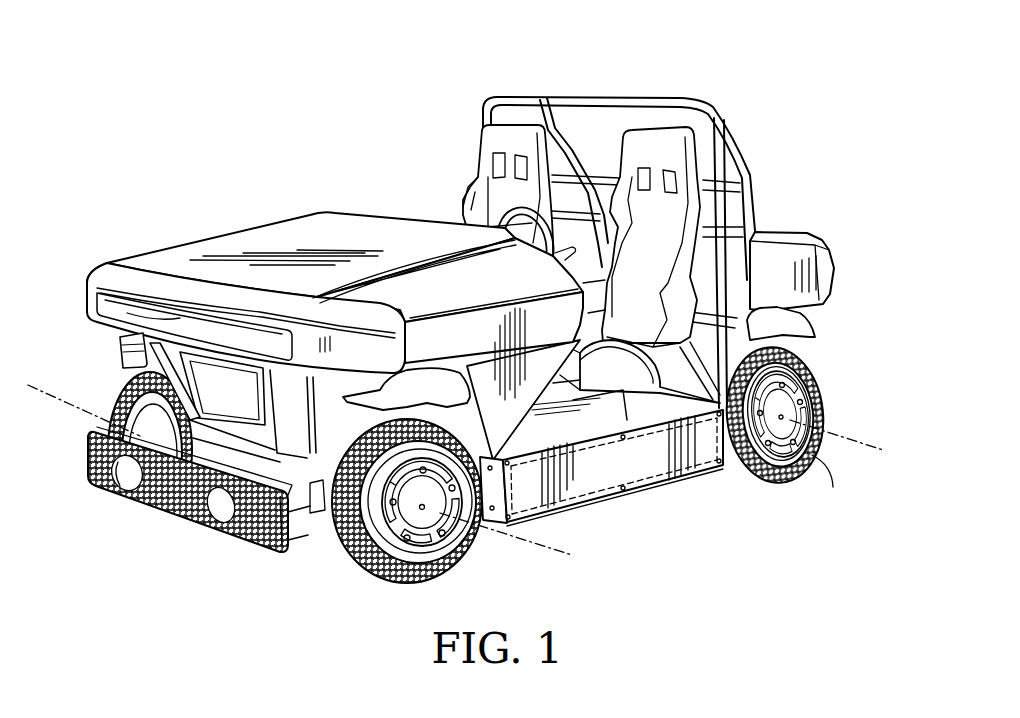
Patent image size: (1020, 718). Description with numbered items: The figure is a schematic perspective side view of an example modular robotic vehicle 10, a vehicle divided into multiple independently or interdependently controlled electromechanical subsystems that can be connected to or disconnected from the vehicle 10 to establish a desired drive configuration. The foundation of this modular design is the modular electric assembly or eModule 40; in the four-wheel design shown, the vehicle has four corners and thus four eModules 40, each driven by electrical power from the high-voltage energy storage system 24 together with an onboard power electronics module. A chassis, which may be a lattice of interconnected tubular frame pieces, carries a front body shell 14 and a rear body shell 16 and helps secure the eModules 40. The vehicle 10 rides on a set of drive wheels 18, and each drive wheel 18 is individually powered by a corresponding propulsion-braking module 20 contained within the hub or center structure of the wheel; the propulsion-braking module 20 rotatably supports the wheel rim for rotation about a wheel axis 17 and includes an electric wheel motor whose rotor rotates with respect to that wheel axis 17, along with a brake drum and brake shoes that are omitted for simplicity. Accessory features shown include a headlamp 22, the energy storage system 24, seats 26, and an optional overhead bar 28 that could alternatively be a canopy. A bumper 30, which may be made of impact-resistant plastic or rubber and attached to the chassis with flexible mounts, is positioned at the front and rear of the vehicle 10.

The modular robotic vehicle 10 is at (467, 315).
The front body shell 14 is at (311, 277).
The rear body shell 16 is at (820, 240).
The wheel axis 17 is at (563, 545).
The drive wheel 18 is at (127, 387).
The propulsion-braking module 20 is at (780, 400).
The headlamp 22 is at (93, 300).
The high-voltage energy storage system 24 is at (608, 470).
The seats 26 is at (513, 140).
The overhead bar 28 is at (597, 97).
The bumper 30 is at (167, 507).
The modular electric assembly 40 is at (800, 309).